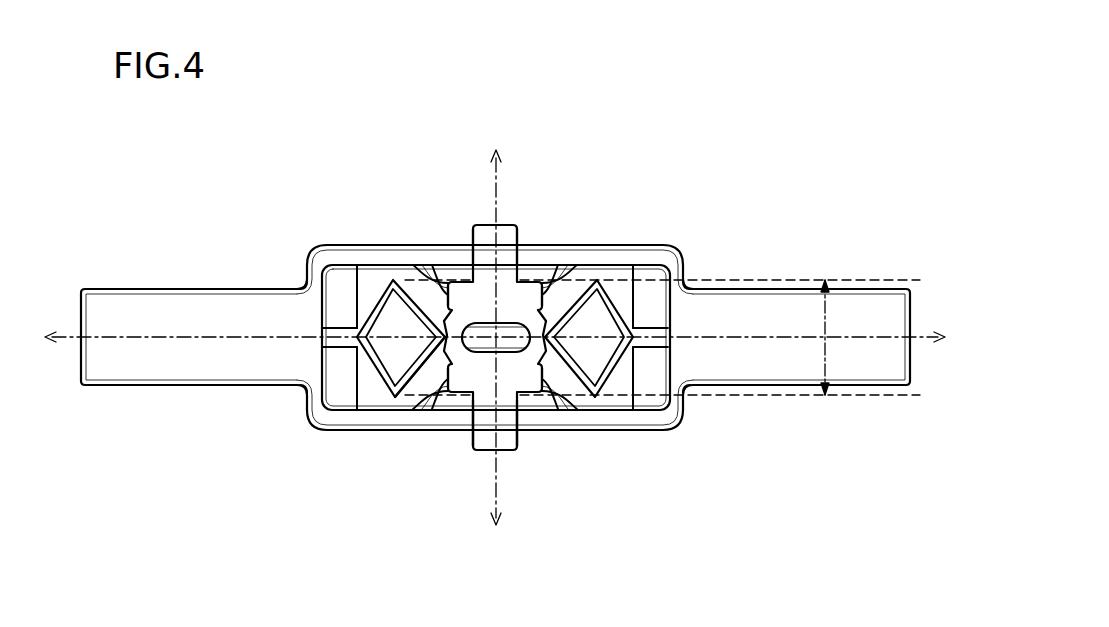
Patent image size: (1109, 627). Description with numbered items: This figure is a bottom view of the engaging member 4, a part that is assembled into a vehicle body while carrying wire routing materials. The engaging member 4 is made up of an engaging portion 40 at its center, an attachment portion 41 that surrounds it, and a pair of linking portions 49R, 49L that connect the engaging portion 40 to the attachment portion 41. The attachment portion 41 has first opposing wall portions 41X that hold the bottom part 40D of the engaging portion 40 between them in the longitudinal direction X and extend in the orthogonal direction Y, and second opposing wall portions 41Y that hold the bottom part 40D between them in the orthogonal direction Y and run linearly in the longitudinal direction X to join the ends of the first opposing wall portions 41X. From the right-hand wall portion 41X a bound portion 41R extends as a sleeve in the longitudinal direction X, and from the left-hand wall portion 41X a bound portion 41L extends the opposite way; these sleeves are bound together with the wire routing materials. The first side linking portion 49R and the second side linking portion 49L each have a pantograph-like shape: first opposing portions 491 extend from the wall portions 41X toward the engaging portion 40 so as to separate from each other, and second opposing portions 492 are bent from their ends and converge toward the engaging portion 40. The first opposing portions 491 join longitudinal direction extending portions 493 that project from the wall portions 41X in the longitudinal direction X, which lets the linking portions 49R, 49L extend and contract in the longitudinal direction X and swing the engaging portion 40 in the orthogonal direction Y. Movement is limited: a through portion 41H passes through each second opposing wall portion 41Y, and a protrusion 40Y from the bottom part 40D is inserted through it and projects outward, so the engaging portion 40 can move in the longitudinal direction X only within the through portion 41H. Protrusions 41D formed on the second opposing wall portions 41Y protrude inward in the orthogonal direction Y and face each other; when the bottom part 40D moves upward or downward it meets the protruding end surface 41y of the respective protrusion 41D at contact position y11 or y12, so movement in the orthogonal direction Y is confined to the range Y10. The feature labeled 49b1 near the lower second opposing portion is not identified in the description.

The engaging member 4 is at (292, 205).
The engaging portion 40 is at (558, 350).
The protrusion 40Y is at (522, 358).
The bottom part 40D is at (515, 407).
The attachment portion 41 is at (176, 390).
The bound portion 41L is at (188, 307).
The bound portion 41R is at (785, 307).
The first opposing wall portions 41X is at (308, 278).
The second opposing wall portions 41Y is at (645, 245).
The through portion 41H is at (466, 250).
The protrusions 41D is at (540, 280).
The protruding end surface 41y is at (456, 268).
The second side linking portion 49L is at (408, 106).
The first side linking portion 49R is at (642, 106).
The first opposing portions 491 is at (388, 290).
The second opposing portions 492 is at (432, 322).
The longitudinal direction extending portions 493 is at (340, 348).
The bottom portion of elastic wall 49b1 is at (443, 392).
The longitudinal direction X is at (105, 337).
The orthogonal direction Y is at (497, 487).
The contact position y11 is at (682, 280).
The contact position y12 is at (682, 392).
The predetermined range Y10 is at (833, 313).